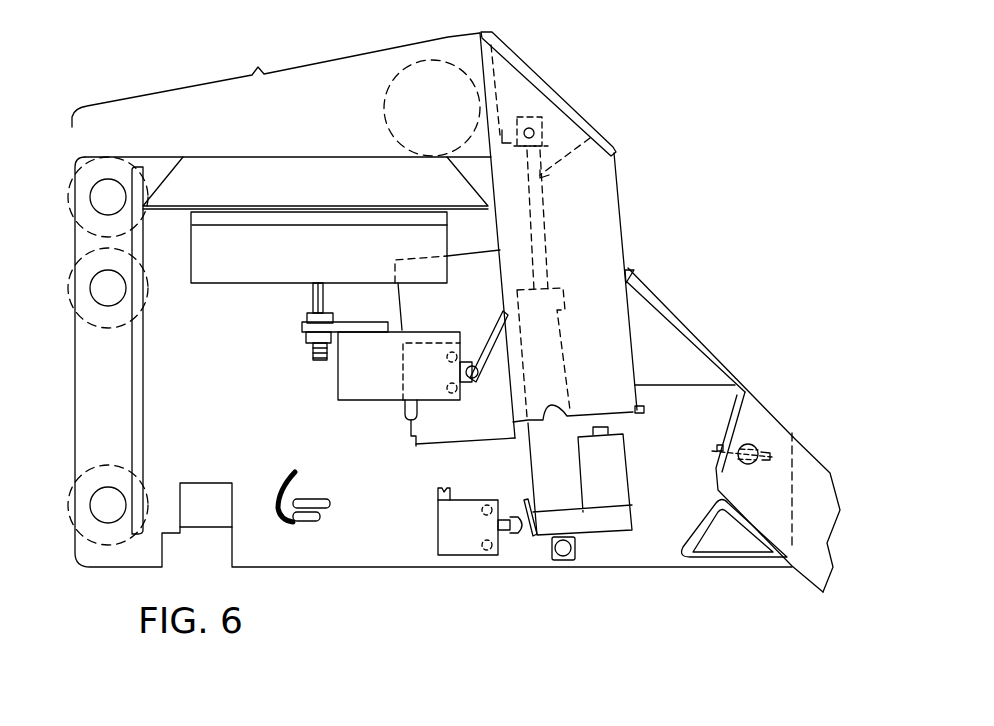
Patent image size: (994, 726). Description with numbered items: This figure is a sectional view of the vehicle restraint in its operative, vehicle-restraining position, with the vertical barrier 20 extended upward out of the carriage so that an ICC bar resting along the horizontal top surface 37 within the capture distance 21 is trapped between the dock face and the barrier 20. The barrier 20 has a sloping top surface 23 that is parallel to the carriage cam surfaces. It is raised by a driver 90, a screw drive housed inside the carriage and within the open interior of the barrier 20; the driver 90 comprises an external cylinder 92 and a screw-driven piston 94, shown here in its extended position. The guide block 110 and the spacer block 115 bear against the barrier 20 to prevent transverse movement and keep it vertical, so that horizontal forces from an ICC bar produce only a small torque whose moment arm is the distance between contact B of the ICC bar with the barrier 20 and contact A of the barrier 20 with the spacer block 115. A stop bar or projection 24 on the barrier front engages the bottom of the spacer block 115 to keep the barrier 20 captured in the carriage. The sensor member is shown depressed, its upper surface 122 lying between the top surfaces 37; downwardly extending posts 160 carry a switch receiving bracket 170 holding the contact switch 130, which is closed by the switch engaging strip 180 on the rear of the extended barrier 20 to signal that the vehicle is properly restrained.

The vertical barrier 20 is at (607, 209).
The capture distance 21 is at (276, 80).
The sloping top surface 23 is at (565, 100).
The stop bar or projection 24 is at (645, 410).
The horizontal top surface 37 is at (163, 157).
The driver 90 is at (532, 537).
The external cylinder 92 is at (568, 497).
The screw-driven piston 94 is at (547, 146).
The guide block 110 is at (413, 434).
The spacer block 115 is at (678, 347).
The upper surface 122 is at (303, 157).
The contact switch 130 is at (478, 378).
The post 160 is at (312, 298).
The switch receiving bracket 170 is at (345, 383).
The switch engaging strip 180 is at (488, 338).
The contact of the barrier with the spacer block A is at (632, 278).
The contact of the ICC bar with the barrier B is at (485, 108).